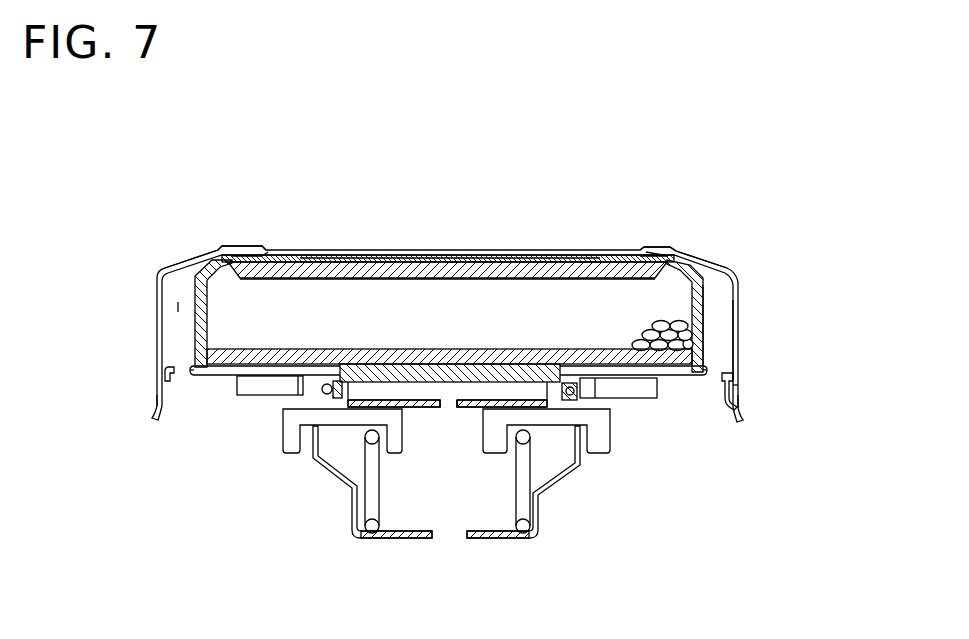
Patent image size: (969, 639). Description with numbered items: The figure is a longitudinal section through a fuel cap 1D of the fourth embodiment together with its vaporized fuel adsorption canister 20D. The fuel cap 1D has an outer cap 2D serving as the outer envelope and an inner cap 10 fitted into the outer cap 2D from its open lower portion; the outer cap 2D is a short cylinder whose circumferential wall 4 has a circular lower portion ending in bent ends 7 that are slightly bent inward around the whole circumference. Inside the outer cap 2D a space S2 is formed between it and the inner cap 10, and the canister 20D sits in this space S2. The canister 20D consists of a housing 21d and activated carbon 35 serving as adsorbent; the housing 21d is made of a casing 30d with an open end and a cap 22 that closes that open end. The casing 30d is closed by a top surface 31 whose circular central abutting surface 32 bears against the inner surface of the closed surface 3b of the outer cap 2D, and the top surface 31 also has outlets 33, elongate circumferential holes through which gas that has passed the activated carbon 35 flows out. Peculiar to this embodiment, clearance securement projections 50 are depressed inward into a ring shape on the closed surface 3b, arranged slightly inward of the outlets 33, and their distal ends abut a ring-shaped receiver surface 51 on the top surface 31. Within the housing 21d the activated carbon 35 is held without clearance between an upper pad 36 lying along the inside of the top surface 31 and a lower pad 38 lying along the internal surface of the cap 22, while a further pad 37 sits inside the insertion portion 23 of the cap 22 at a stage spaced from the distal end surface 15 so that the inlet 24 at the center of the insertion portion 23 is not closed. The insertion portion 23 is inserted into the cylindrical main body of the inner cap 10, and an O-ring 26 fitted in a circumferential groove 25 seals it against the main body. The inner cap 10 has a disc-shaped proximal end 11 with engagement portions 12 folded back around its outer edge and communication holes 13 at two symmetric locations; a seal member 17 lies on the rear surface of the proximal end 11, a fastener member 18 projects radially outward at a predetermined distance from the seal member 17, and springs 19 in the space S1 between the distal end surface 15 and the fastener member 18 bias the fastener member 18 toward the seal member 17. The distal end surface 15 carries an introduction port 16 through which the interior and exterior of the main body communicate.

The fuel cap 1D is at (497, 154).
The outer cap 2D is at (158, 348).
The vaporized fuel adsorption canister 20D is at (706, 296).
The space S2 is at (178, 306).
The top surface 31 is at (585, 255).
The closed surface 3b is at (480, 254).
The clearance securement projections 50 is at (278, 251).
The receiver surface 51 is at (268, 253).
The outlets 33 is at (238, 257).
The abutting surface 32 is at (412, 262).
The pad 36 is at (340, 280).
The casing 30d is at (712, 340).
The housing 21d is at (714, 318).
The activated carbon 35 is at (652, 330).
The pad 38 is at (440, 350).
The pad 37 is at (503, 372).
The proximal end 11 is at (222, 375).
The seal member 17 is at (257, 387).
The cap 22 is at (652, 400).
The O-ring 26 is at (325, 396).
The insertion portion 23 is at (432, 408).
The inlet 24 is at (448, 408).
The fastener member 18 is at (288, 426).
The groove 25 is at (592, 426).
The springs 19 is at (372, 533).
The space S1 is at (499, 481).
The introduction port 16 is at (425, 539).
The inner cap 10 is at (557, 488).
The distal end surface 15 is at (492, 539).
The engagement portions 12 is at (169, 382).
The communication holes 13 is at (192, 377).
The bent ends 7 is at (158, 412).
The circumferential wall 4 is at (745, 374).